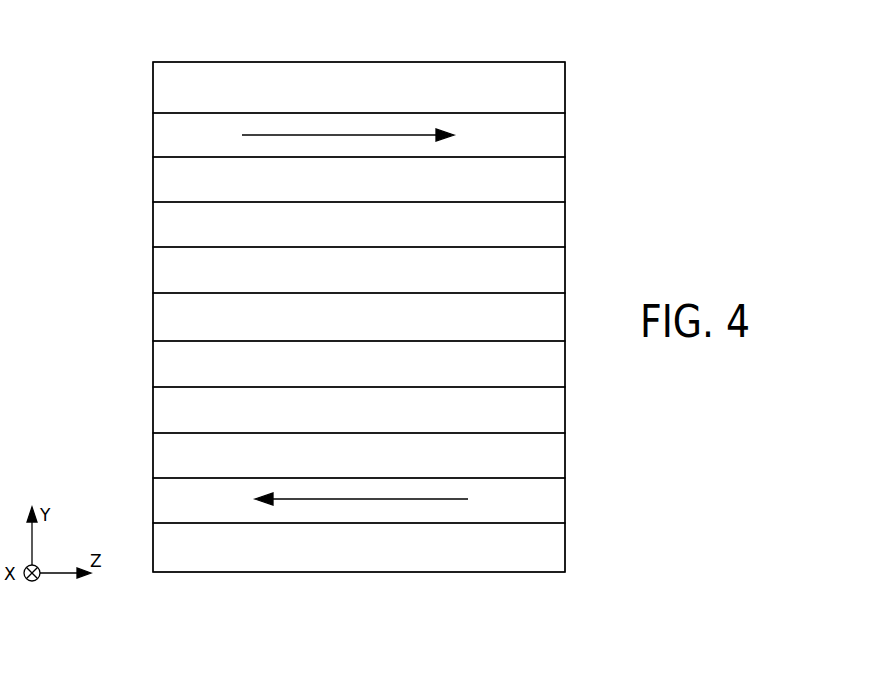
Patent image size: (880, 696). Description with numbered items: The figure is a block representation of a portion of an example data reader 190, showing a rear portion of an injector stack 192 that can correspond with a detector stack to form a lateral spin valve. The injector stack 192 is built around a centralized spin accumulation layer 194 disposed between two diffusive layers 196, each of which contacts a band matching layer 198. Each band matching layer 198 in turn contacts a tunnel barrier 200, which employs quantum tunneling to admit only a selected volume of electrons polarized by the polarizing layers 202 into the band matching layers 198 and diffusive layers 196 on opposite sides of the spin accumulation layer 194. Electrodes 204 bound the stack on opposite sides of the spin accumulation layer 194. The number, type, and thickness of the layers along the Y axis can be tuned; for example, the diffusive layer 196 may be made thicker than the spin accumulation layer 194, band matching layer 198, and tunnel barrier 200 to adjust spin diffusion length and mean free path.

The data reader 190 is at (620, 40).
The injector stack 192 is at (148, 58).
The spin accumulation layer 194 is at (551, 327).
The diffusive layer 196 is at (551, 281).
The band matching layer 198 is at (551, 234).
The tunnel barrier 200 is at (551, 190).
The polarizing layer 202 is at (551, 145).
The electrode 204 is at (551, 98).